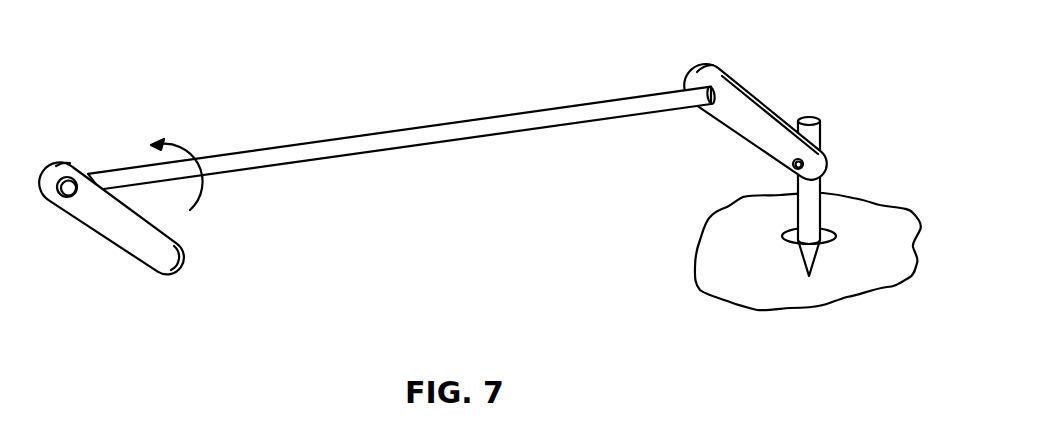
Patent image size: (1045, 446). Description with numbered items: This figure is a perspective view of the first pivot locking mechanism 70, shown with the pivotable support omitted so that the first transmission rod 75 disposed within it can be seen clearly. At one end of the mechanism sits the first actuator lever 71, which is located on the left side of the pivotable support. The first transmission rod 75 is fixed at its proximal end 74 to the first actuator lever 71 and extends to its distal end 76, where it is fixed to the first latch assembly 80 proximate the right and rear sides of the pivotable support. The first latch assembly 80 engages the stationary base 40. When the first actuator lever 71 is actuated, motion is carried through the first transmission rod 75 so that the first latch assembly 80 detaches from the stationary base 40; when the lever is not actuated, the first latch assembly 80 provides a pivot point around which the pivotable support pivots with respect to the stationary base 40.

The stationary base 40 is at (850, 290).
The first pivot locking mechanism 70 is at (496, 208).
The first actuator lever 71 is at (124, 236).
The proximal end 74 is at (120, 168).
The first transmission rod 75 is at (435, 124).
The distal end 76 is at (684, 88).
The first latch assembly 80 is at (834, 165).